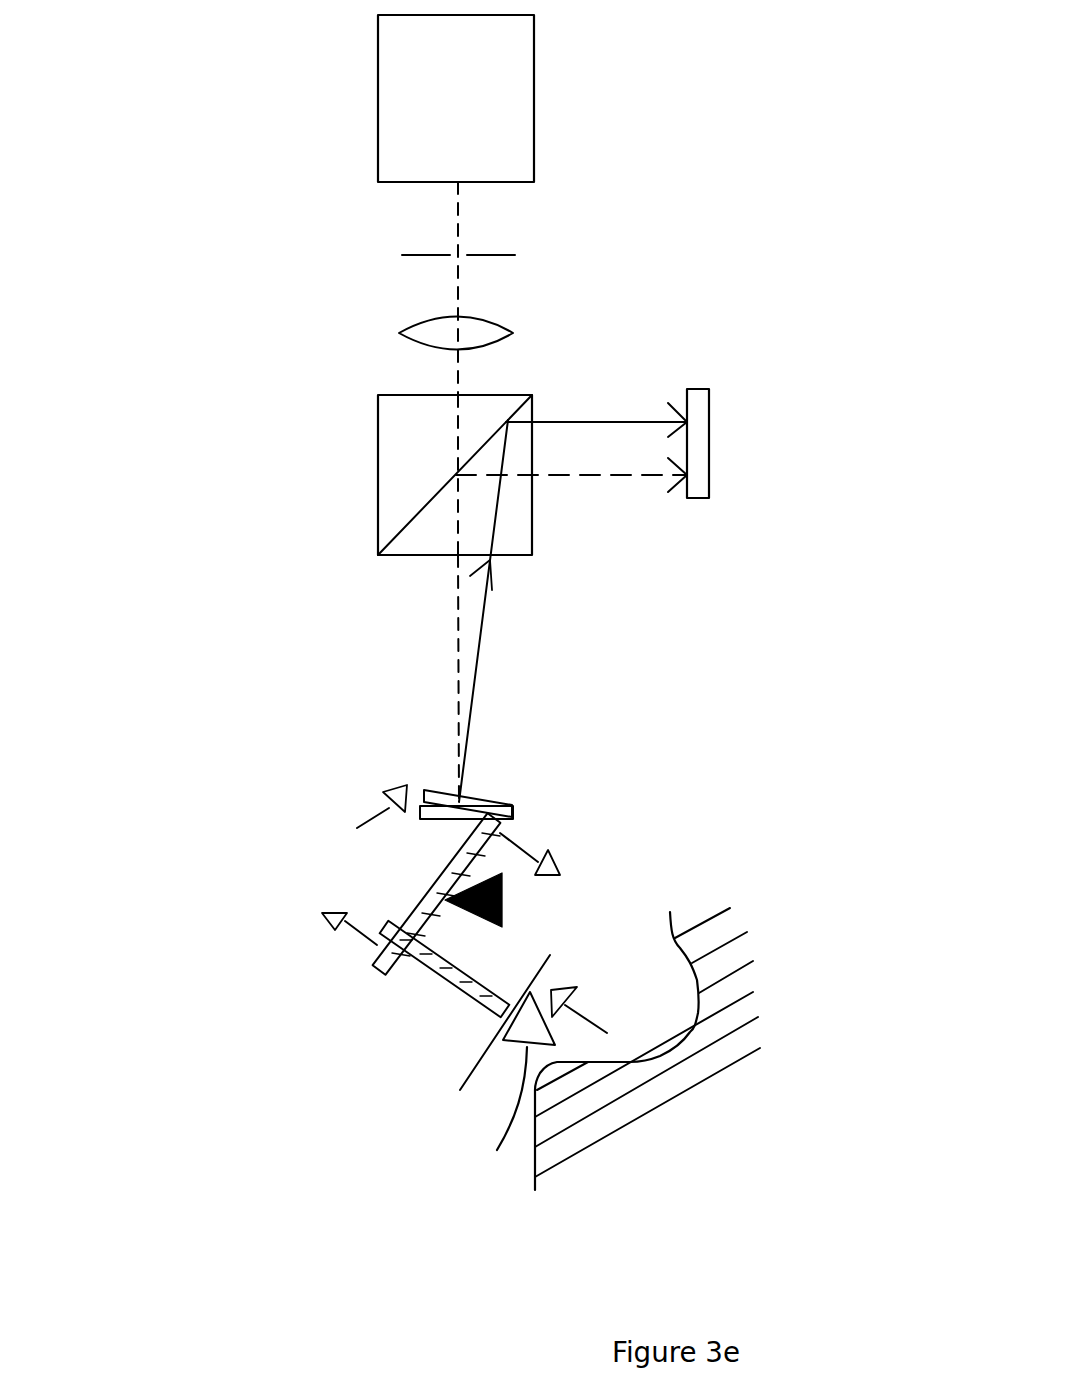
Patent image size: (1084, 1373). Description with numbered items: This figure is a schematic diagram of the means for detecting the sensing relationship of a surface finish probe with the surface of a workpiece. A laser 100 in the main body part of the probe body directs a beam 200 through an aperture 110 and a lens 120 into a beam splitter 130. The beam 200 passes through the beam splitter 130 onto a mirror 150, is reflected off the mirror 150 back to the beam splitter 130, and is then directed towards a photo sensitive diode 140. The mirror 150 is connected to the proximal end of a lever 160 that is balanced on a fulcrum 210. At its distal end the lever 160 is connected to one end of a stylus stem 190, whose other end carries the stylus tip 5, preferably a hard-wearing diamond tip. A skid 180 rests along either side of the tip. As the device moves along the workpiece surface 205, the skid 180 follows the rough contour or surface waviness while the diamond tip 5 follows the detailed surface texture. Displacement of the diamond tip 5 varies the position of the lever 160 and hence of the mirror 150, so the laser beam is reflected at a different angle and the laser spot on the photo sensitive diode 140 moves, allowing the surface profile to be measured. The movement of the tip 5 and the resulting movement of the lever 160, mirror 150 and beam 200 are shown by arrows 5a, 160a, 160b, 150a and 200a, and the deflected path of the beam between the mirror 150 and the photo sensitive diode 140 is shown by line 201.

The laser 100 is at (410, 75).
The beam 200 is at (458, 220).
The aperture 110 is at (387, 249).
The lens 120 is at (382, 322).
The beam splitter 130 is at (378, 456).
The photo sensitive diode 140 is at (710, 490).
The arrow 200a is at (472, 577).
The line 201 is at (478, 628).
The mirror 150 is at (510, 803).
The arrow 150a is at (393, 805).
The lever 160 is at (363, 978).
The arrow 160a is at (357, 942).
The arrow 160b is at (535, 850).
The fulcrum 210 is at (518, 903).
The stylus stem 190 is at (430, 975).
The skid 180 is at (448, 1103).
The stylus tip 5 is at (605, 1051).
The arrow 5a is at (588, 1015).
The workpiece surface 205 is at (763, 977).